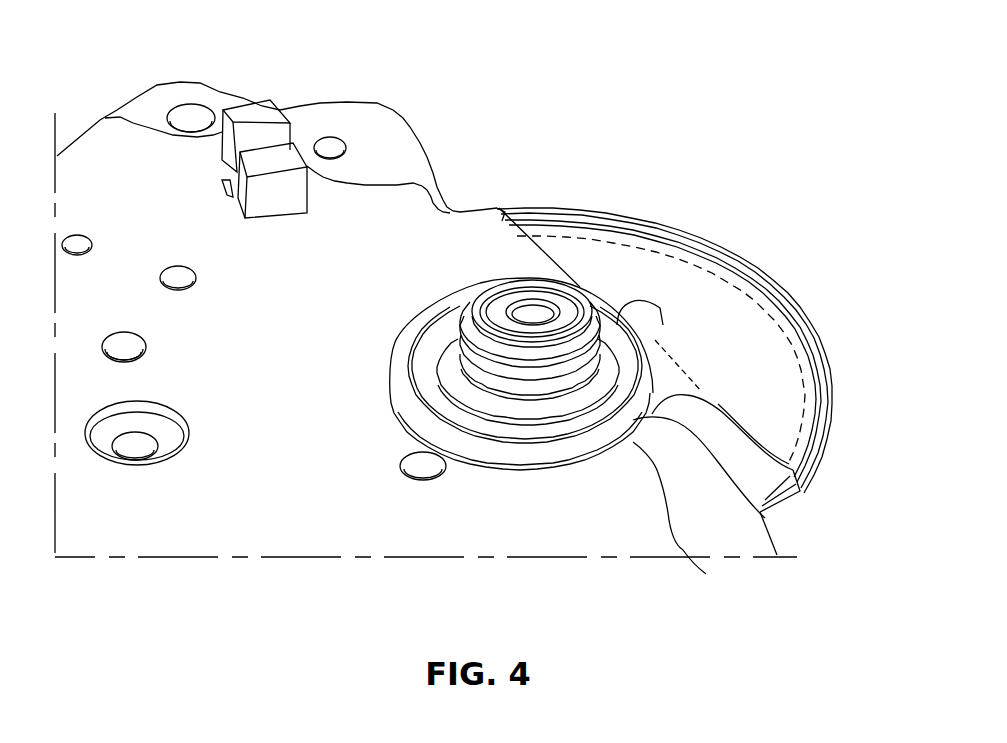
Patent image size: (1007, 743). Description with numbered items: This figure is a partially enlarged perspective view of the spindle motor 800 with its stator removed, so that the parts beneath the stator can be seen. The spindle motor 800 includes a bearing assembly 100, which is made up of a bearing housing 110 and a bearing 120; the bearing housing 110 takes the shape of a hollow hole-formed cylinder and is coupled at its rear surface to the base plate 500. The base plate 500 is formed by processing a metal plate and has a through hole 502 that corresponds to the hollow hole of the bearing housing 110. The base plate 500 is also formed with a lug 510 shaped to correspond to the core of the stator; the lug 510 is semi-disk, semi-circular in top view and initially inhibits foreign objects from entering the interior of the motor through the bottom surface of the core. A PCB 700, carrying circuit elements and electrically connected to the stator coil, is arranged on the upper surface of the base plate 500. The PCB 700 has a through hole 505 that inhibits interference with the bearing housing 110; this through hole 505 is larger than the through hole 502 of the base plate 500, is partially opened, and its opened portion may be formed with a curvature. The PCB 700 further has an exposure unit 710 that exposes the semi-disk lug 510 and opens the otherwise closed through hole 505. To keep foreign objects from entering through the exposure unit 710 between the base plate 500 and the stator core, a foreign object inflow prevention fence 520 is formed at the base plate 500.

The bearing assembly 100 is at (558, 297).
The bearing housing 110 is at (607, 370).
The bearing 120 is at (545, 310).
The base plate 500 is at (377, 132).
The through hole 502 is at (765, 517).
The through hole 505 is at (706, 574).
The lug 510 is at (772, 382).
The foreign object inflow prevention fence 520 is at (793, 315).
The PCB 700 is at (136, 163).
The exposure unit 710 is at (797, 445).
The spindle motor 800 is at (719, 362).